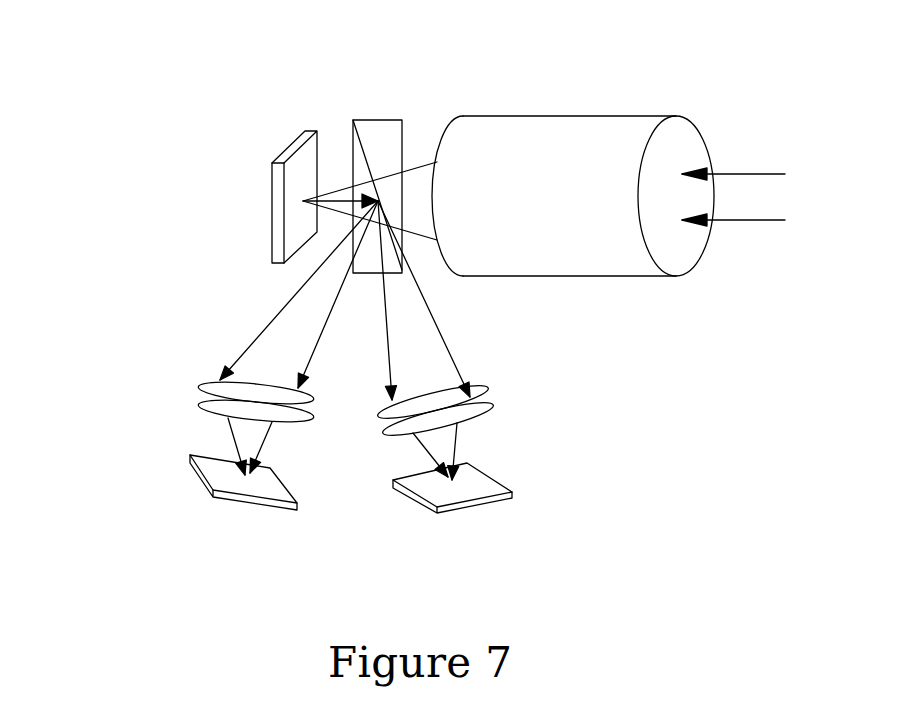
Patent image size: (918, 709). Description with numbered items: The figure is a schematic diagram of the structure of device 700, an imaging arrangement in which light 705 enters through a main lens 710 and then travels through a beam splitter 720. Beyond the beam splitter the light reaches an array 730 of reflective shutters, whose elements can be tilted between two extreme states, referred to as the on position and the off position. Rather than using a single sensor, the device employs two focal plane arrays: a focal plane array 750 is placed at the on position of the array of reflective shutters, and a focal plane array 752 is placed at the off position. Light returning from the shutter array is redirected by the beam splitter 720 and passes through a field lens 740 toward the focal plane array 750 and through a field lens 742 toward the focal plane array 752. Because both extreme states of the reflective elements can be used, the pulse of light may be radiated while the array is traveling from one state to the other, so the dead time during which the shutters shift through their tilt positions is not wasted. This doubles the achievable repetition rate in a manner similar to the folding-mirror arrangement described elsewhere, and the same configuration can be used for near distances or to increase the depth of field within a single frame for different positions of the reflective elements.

The device 700 is at (83, 144).
The light 705 is at (765, 174).
The main lens 710 is at (587, 117).
The beam splitter 720 is at (382, 118).
The array of reflective shutters 730 is at (272, 200).
The field lens 740 is at (212, 382).
The field lens 742 is at (480, 390).
The focal plane array 750 is at (243, 507).
The focal plane array 752 is at (477, 507).